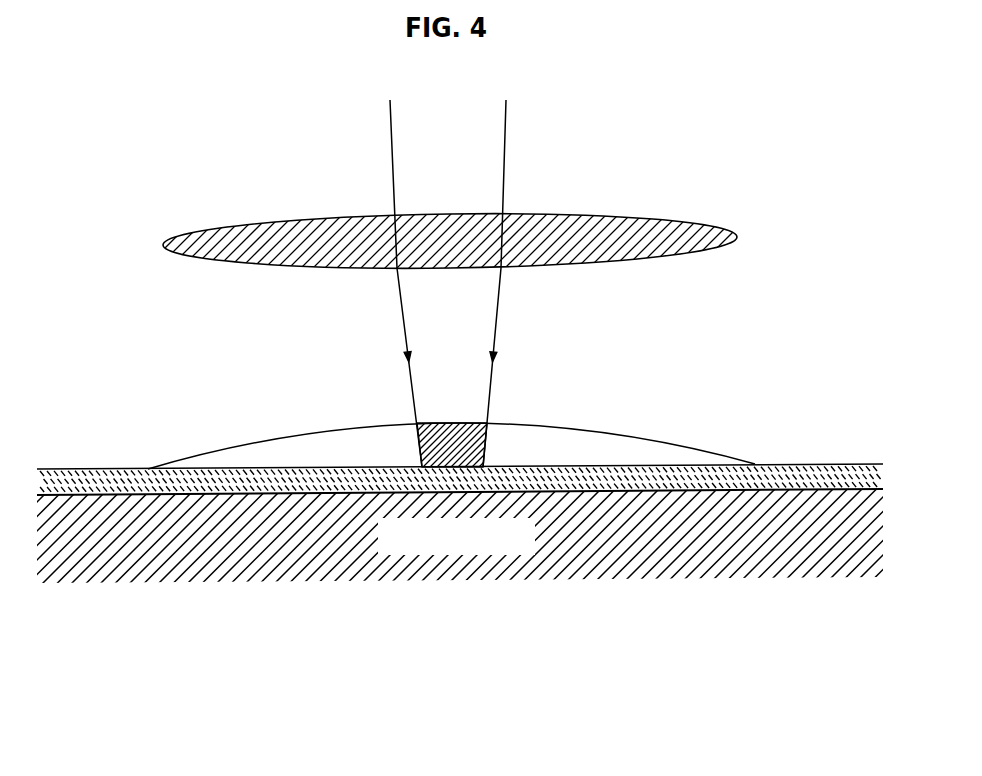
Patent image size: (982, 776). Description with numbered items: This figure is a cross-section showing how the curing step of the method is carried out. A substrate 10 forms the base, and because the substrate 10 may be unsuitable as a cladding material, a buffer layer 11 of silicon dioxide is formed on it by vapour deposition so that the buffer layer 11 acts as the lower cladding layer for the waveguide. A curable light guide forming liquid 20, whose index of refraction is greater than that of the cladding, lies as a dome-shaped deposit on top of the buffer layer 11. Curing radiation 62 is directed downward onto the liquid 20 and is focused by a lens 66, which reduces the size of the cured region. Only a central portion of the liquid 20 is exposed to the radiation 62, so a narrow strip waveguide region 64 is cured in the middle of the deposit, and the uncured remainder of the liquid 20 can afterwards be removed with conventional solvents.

The substrate 10 is at (823, 578).
The buffer layer 11 is at (823, 463).
The liquid 20 is at (247, 440).
The curing radiation 62 is at (497, 342).
The strip waveguide region 64 is at (418, 438).
The lens 66 is at (700, 223).